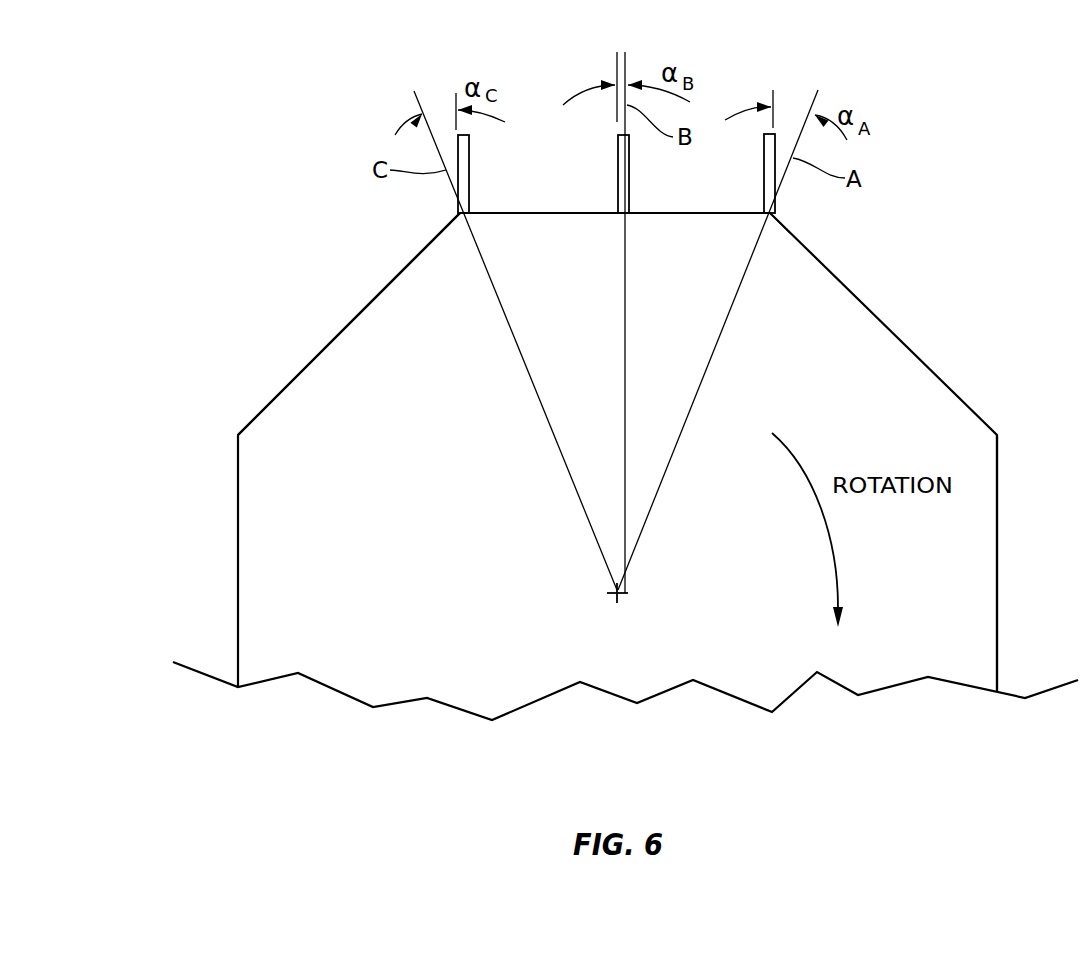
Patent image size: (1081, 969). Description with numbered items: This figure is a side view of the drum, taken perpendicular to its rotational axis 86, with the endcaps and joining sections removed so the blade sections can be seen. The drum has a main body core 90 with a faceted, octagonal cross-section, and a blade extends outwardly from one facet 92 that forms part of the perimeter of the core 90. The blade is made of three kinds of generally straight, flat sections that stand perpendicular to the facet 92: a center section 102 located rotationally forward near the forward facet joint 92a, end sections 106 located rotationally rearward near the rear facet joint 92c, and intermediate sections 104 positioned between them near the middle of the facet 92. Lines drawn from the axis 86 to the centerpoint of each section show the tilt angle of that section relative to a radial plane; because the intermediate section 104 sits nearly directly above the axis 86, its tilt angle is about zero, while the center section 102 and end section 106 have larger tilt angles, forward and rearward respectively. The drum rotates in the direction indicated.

The axis 86 is at (620, 596).
The main body core 90 is at (285, 556).
The facet 92 is at (663, 213).
The forward facet joint 92a is at (775, 213).
The rear facet joint 92c is at (460, 213).
The center section 102 is at (764, 175).
The intermediate section 104 is at (618, 167).
The end section 106 is at (470, 152).